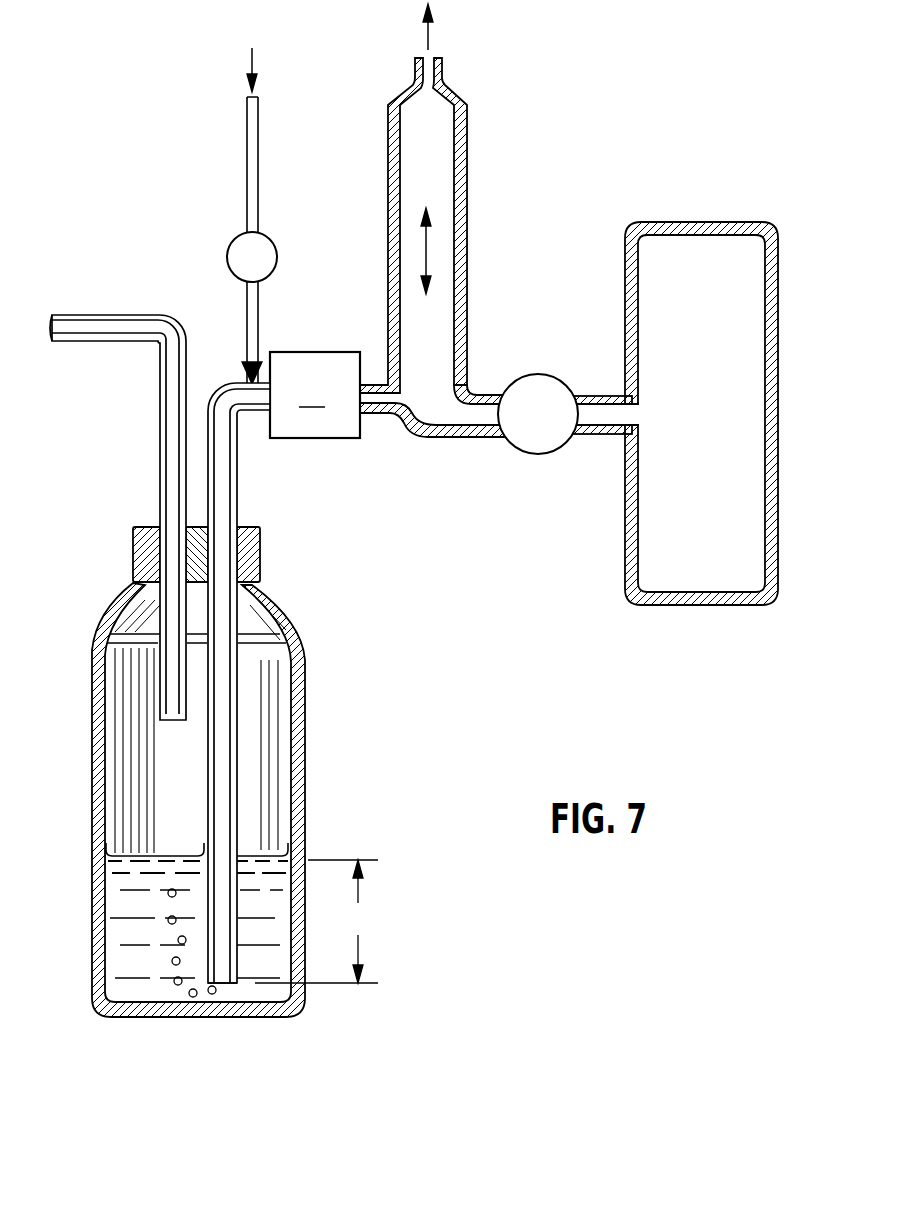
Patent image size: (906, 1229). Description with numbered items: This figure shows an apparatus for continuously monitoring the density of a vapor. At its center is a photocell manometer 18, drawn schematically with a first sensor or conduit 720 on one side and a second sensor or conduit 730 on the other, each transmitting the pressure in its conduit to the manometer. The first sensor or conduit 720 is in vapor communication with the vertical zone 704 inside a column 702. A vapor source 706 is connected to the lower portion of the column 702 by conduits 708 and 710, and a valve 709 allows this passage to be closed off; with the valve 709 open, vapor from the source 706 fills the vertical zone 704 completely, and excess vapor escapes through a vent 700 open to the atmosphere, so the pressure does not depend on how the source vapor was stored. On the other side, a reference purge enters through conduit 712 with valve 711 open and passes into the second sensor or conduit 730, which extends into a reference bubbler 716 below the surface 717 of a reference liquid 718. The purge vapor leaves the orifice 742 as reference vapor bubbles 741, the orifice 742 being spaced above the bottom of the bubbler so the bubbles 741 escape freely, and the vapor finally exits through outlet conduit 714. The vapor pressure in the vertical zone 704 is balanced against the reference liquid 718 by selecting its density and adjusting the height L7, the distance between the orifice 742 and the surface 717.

The photocell manometer 18 is at (315, 395).
The vent 700 is at (436, 60).
The column 702 is at (467, 188).
The vertical zone 704 is at (428, 250).
The vapor source 706 is at (695, 604).
The conduit 708 is at (598, 397).
The valve 709 is at (530, 453).
The conduit 710 is at (485, 393).
The valve 711 is at (277, 254).
The conduit 712 is at (246, 307).
The outlet conduit 714 is at (103, 316).
The reference bubbler 716 is at (92, 784).
The surface of reference liquid 717 is at (263, 860).
The reference liquid 718 is at (117, 897).
The first sensor or conduit 720 is at (371, 417).
The second sensor or conduit 730 is at (248, 415).
The reference vapor bubbles 741 is at (169, 924).
The orifice 742 is at (223, 992).
The height of reference liquid L7 is at (316, 921).